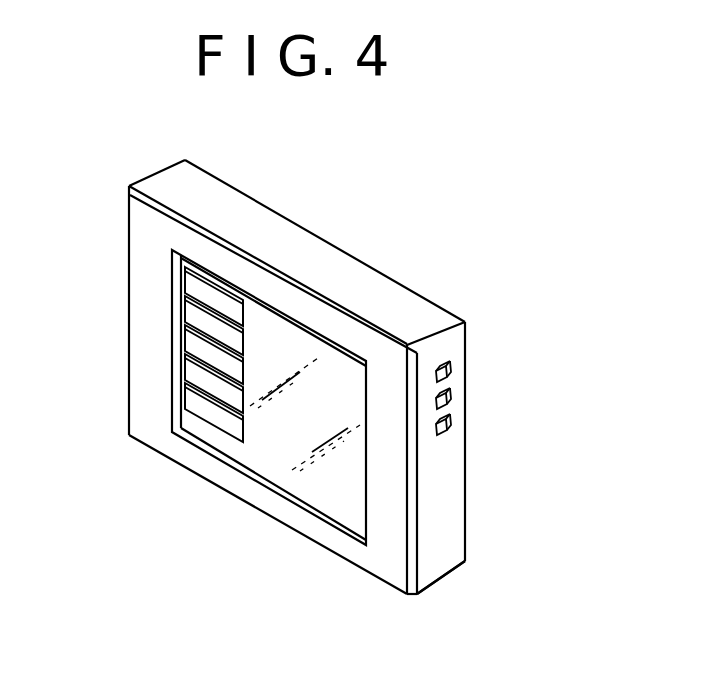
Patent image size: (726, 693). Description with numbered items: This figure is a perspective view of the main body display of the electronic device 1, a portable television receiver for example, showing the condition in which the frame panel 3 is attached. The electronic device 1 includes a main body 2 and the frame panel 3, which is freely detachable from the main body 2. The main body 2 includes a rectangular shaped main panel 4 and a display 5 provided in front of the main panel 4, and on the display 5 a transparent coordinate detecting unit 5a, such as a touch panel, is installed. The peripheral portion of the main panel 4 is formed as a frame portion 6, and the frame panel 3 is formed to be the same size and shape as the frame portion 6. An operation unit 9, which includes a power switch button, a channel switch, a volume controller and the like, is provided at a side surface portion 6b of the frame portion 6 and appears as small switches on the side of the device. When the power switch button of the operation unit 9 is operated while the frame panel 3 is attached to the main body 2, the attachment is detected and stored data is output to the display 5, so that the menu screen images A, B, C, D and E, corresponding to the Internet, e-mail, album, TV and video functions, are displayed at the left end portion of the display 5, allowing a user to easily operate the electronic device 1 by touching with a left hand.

The electronic device 1 is at (441, 161).
The main body 2 is at (262, 233).
The frame panel 3 is at (187, 450).
The main panel 4 is at (297, 250).
The display 5 is at (338, 368).
The transparent coordinate detecting unit 5a is at (280, 452).
The frame portion 6 is at (445, 483).
The side surface portion 6b is at (441, 556).
The operation unit 9 is at (452, 373).